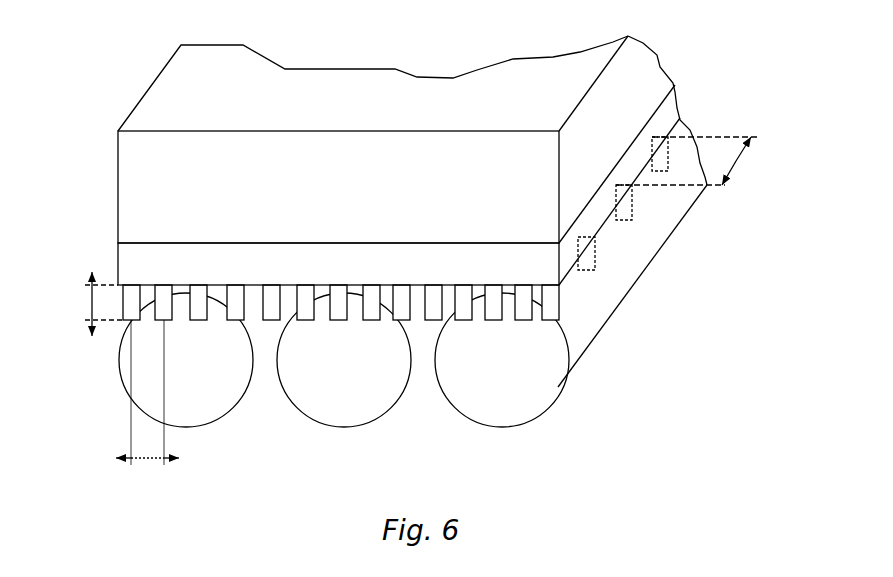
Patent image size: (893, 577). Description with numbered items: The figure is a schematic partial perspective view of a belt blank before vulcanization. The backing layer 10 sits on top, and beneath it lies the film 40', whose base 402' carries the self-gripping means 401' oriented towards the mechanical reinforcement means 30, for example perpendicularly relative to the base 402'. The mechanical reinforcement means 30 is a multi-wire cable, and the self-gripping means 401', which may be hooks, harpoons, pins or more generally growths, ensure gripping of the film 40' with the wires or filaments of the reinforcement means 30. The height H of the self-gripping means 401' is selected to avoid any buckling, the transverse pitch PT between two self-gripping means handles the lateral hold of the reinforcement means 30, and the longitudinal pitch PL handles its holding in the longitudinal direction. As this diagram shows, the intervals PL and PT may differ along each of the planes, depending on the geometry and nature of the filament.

The backing layer 10 is at (155, 162).
The mechanical reinforcement means 30 is at (493, 385).
The film 40' is at (362, 201).
The self-gripping means 401' is at (653, 210).
The base 402' is at (301, 266).
The height of the self-gripping means H is at (97, 304).
The transverse pitch PT is at (147, 403).
The longitudinal pitch PL is at (688, 161).